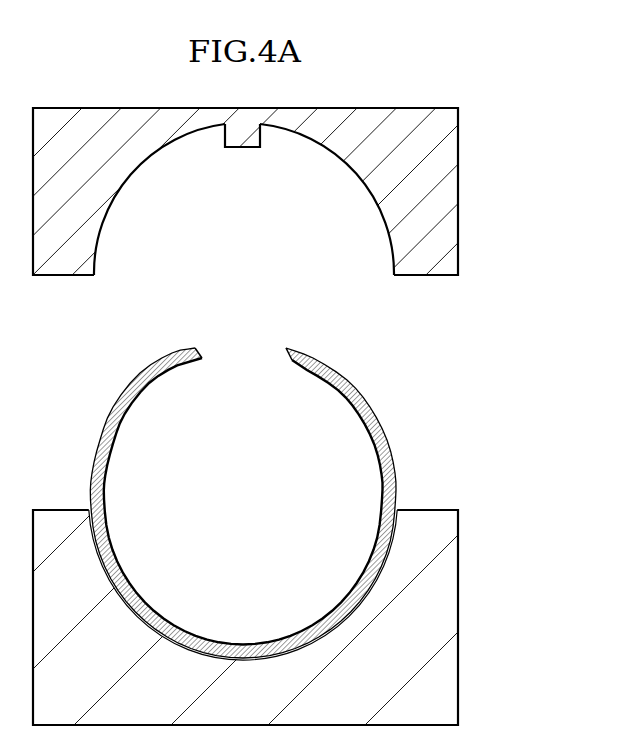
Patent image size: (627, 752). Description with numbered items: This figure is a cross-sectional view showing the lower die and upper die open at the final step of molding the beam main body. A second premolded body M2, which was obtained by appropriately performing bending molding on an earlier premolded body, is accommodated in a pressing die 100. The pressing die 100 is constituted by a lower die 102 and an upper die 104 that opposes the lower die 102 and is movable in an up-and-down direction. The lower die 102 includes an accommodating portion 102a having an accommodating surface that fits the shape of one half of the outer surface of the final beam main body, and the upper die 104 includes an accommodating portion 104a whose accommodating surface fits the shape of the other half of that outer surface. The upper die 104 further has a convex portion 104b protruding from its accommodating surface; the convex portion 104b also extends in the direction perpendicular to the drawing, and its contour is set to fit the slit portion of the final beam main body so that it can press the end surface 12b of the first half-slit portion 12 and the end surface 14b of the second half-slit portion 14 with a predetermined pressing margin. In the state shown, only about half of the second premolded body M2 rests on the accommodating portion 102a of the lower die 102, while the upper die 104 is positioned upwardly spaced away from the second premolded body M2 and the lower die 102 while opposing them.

The pressing die 100 is at (563, 342).
The lower die 102 is at (295, 578).
The accommodating portion 102a is at (334, 600).
The upper die 104 is at (300, 233).
The accommodating portion 104a is at (386, 237).
The convex portion 104b is at (242, 148).
The first half-slit portion 12 is at (299, 347).
The end surface 12b is at (284, 350).
The second half-slit portion 14 is at (191, 342).
The end surface 14b is at (205, 352).
The second premolded body M2 is at (392, 397).